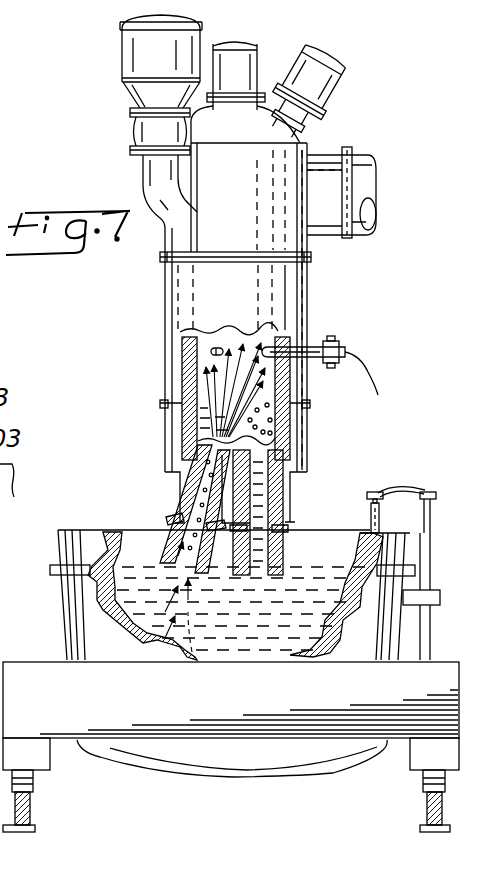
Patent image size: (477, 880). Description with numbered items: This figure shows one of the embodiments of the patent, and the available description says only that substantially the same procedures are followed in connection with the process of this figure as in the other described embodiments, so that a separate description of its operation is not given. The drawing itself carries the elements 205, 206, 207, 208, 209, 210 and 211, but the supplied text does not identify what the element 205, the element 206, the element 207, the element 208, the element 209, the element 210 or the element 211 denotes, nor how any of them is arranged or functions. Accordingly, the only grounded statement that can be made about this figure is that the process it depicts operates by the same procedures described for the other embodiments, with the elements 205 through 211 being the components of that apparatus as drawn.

The ladle 205 is at (63, 622).
The inclined discharge tube 206 is at (173, 489).
The vessel body 207 is at (302, 296).
The riser pipe 208 is at (288, 503).
The side port 209 is at (322, 160).
The sensor element 210 is at (209, 352).
The probe tube 211 is at (317, 341).